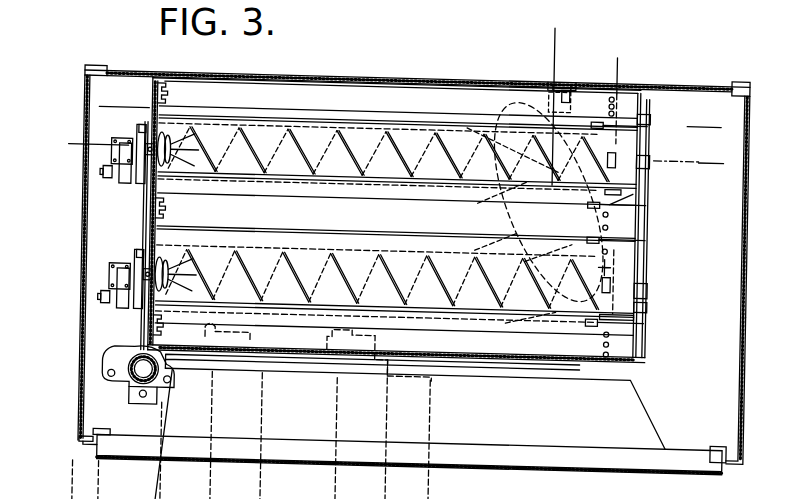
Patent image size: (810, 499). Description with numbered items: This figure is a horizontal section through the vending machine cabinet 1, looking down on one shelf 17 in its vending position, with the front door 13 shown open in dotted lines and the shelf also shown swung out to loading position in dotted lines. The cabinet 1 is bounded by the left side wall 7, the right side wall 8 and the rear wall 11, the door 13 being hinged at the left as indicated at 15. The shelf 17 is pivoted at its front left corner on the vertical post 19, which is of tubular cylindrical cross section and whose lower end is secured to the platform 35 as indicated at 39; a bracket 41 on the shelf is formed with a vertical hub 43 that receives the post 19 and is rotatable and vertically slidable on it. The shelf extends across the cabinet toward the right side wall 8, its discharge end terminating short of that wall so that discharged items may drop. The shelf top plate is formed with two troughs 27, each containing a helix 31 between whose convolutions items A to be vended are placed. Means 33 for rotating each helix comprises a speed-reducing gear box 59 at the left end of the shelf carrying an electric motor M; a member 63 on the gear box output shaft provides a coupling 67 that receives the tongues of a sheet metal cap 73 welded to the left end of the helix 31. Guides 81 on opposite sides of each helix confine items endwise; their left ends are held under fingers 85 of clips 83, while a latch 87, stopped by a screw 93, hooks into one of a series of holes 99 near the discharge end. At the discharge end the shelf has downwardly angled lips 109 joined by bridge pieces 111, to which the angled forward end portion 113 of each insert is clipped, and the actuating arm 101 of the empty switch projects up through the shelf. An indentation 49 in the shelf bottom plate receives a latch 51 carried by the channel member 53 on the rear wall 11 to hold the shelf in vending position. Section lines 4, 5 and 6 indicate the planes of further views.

The cabinet 1 is at (84, 103).
The left side wall 7 is at (86, 221).
The right side wall 8 is at (603, 48).
The platform 35 is at (750, 338).
The front door 13 is at (466, 461).
The hinge 15 is at (93, 440).
The bracket 41 is at (228, 365).
The shelf 17 is at (520, 358).
The rear wall 11 is at (432, 76).
The downwardly angled lips 109 is at (650, 88).
The guide 81 is at (331, 103).
The trough 27 is at (268, 120).
The helix 31 is at (402, 125).
The fingers 85 is at (169, 92).
The electric motor M is at (112, 166).
The means for rotating each helix 33 is at (108, 172).
The speed-reducing gear box 59 is at (140, 134).
The member 63 is at (148, 185).
The clip 83 is at (147, 212).
The coupling 67 is at (168, 166).
The sheet metal cap 73 is at (197, 165).
The lower end securement of post 39 is at (112, 372).
The vertical post 19 is at (130, 388).
The vertical hub 43 is at (148, 403).
The latch 87 is at (648, 191).
The actuating arm 101 is at (624, 178).
The bridge piece 111 is at (651, 105).
The downwardly angled forward end portion 113 is at (651, 146).
The holes 99 is at (608, 100).
The screw 93 is at (604, 214).
The indentation 49 is at (548, 89).
The channel member 53 is at (548, 71).
The latch 51 is at (566, 77).
The items to be vended A is at (546, 206).
The section line 6- 6 is at (541, 16).
The section line 5- 5 is at (103, 82).
The section line 4- 4 is at (72, 124).